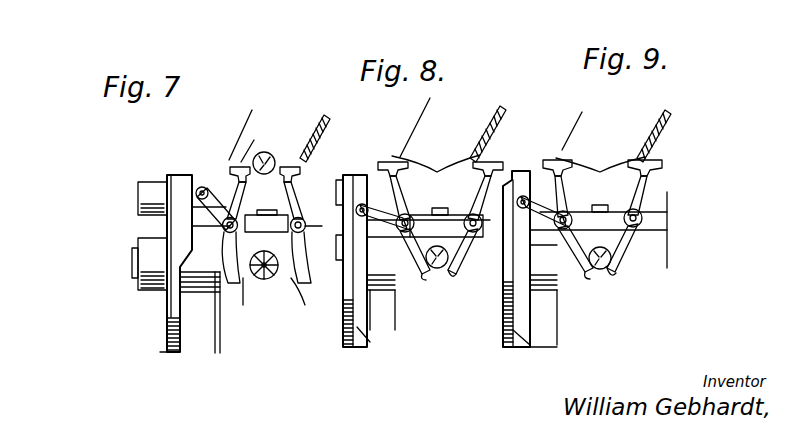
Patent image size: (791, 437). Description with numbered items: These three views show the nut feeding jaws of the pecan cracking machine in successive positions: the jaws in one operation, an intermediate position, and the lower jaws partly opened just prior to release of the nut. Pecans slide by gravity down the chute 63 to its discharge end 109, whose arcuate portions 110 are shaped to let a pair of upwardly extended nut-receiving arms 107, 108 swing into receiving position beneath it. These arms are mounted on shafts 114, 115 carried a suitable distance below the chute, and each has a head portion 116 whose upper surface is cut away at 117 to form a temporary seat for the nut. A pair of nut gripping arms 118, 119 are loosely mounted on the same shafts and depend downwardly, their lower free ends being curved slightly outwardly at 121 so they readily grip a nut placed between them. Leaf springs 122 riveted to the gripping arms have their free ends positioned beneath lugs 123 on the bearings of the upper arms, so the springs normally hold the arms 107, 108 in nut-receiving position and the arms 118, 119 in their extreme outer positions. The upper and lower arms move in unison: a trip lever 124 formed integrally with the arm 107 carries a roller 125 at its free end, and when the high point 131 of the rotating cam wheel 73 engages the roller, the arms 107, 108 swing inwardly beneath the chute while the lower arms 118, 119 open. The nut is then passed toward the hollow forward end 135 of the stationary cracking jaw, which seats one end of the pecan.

In FIG. 7, the chute 63 is at (320, 118).
In FIG. 8, the chute 63 is at (497, 115).
In FIG. 9, the chute 63 is at (668, 111).
In FIG. 7, the cam wheel 73 is at (170, 320).
In FIG. 8, the cam wheel 73 is at (347, 340).
In FIG. 9, the cam wheel 73 is at (512, 303).
In FIG. 7, the nut-receiving arm 107 is at (232, 168).
In FIG. 8, the nut-receiving arm 107 is at (382, 163).
In FIG. 9, the nut-receiving arm 107 is at (560, 175).
In FIG. 7, the nut-receiving arm 108 is at (301, 170).
In FIG. 8, the nut-receiving arm 108 is at (476, 191).
In FIG. 9, the nut-receiving arm 108 is at (655, 178).
In FIG. 7, the discharge end 109 is at (318, 143).
In FIG. 8, the discharge end 109 is at (465, 150).
In FIG. 9, the discharge end 109 is at (625, 142).
In FIG. 8, the arcuate portions 110 is at (415, 157).
In FIG. 9, the arcuate portions 110 is at (582, 155).
In FIG. 7, the shaft 114 is at (192, 207).
In FIG. 7, the shaft 115 is at (303, 220).
In FIG. 7, the head portion 116 is at (274, 153).
In FIG. 8, the cut-away seat 117 is at (404, 172).
In FIG. 7, the nut gripping arm 118 is at (237, 250).
In FIG. 8, the nut gripping arm 118 is at (420, 238).
In FIG. 9, the nut gripping arm 118 is at (575, 238).
In FIG. 7, the nut gripping arm 119 is at (291, 247).
In FIG. 8, the nut gripping arm 119 is at (455, 243).
In FIG. 9, the nut gripping arm 119 is at (628, 238).
In FIG. 7, the outwardly curved free end 121 is at (248, 266).
In FIG. 9, the outwardly curved free end 121 is at (586, 273).
In FIG. 7, the leaf spring 122 is at (314, 268).
In FIG. 8, the leaf spring 122 is at (420, 266).
In FIG. 7, the lug 123 is at (192, 226).
In FIG. 9, the lug 123 is at (650, 230).
In FIG. 7, the trip lever 124 is at (266, 209).
In FIG. 8, the trip lever 124 is at (397, 210).
In FIG. 9, the trip lever 124 is at (553, 212).
In FIG. 7, the roller 125 is at (200, 190).
In FIG. 8, the roller 125 is at (381, 216).
In FIG. 9, the roller 125 is at (541, 211).
In FIG. 7, the high point of the cam 131 is at (190, 213).
In FIG. 7, the hollow forward end 135 is at (264, 281).